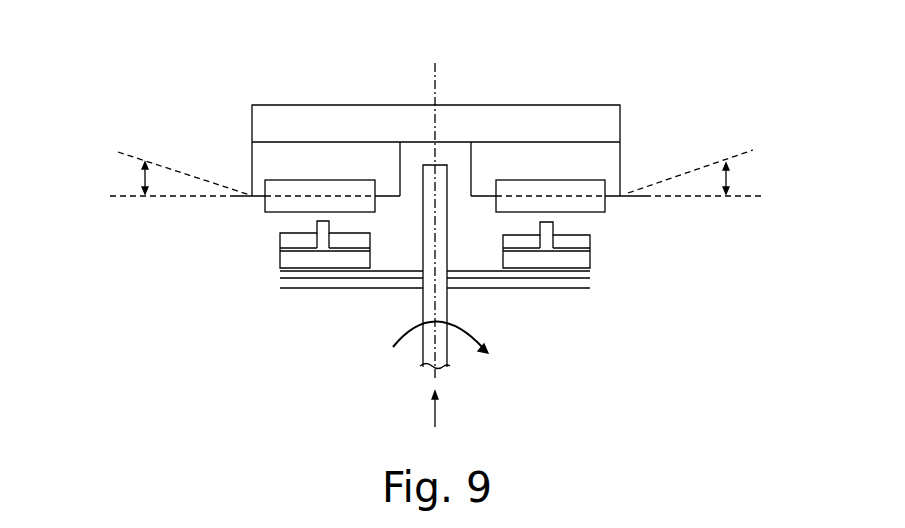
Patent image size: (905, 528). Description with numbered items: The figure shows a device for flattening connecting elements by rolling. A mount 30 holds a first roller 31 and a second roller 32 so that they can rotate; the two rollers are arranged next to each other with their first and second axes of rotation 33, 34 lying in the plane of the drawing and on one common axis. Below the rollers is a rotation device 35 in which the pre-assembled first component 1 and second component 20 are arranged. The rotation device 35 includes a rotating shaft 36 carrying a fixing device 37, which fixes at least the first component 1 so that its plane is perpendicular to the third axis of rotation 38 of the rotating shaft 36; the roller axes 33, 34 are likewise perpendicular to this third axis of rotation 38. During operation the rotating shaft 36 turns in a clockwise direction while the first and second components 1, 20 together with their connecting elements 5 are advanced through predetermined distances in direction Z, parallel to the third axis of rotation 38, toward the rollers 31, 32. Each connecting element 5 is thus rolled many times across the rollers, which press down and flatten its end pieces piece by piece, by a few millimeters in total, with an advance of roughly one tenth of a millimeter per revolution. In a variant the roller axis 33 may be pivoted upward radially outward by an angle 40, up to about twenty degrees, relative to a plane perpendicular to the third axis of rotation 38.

The first component 1 is at (287, 260).
The connecting element 5 is at (325, 242).
The second component 20 is at (352, 240).
The mount 30 is at (500, 113).
The first roller 31 is at (327, 187).
The second roller 32 is at (537, 187).
The first axis of rotation 33 is at (268, 209).
The second axis of rotation 34 is at (577, 197).
The rotation device 35 is at (403, 302).
The rotating shaft 36 is at (428, 313).
The fixing device 37 is at (512, 285).
The third axis of rotation 38 is at (433, 82).
The angle 40 is at (145, 177).
The direction Z is at (436, 412).